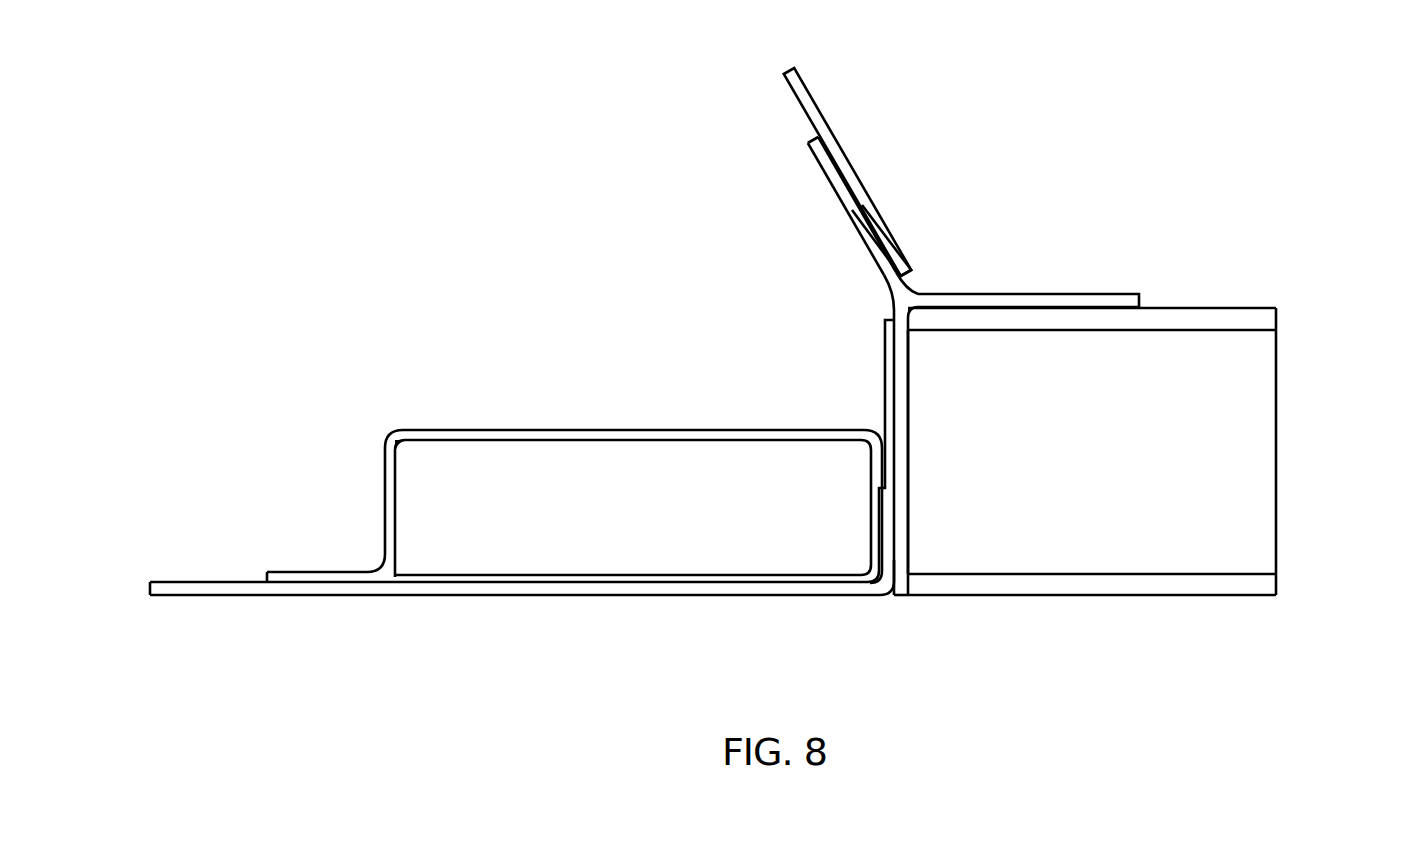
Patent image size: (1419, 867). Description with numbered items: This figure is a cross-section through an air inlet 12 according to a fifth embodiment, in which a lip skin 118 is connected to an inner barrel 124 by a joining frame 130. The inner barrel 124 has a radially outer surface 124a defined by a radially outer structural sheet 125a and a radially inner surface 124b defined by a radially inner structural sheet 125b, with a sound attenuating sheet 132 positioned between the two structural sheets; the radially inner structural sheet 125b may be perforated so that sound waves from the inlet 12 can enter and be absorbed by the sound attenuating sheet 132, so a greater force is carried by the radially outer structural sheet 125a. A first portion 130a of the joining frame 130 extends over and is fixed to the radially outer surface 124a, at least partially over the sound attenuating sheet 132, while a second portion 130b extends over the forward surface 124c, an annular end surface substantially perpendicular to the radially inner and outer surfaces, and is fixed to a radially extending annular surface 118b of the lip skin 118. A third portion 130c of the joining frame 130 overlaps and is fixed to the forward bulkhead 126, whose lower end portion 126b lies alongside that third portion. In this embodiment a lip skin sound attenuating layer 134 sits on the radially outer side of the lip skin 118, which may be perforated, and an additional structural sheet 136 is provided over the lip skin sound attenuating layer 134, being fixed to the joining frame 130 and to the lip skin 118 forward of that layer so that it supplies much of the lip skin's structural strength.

The inlet 12 is at (482, 159).
The lip skin 118 is at (522, 497).
The radially extending annular surface of the lip skin 118b is at (886, 503).
The inner barrel 124 is at (1079, 458).
The radially outer surface 124a is at (1256, 307).
The radially inner surface 124b is at (1235, 597).
The forward surface 124c is at (906, 374).
The radially outer structural sheet 125a is at (1277, 320).
The radially inner structural sheet 125b is at (1277, 580).
The forward bulkhead 126 is at (882, 164).
The lower portion of angled flange 126b is at (881, 240).
The joining frame 130 is at (950, 407).
The first portion of the joining frame 130a is at (1043, 299).
The second portion of the joining frame 130b is at (901, 578).
The third portion of the joining frame 130c is at (840, 195).
The sound attenuating sheet 132 is at (1228, 404).
The lip skin sound attenuating layer 134 is at (516, 465).
The additional structural sheet 136 is at (574, 462).